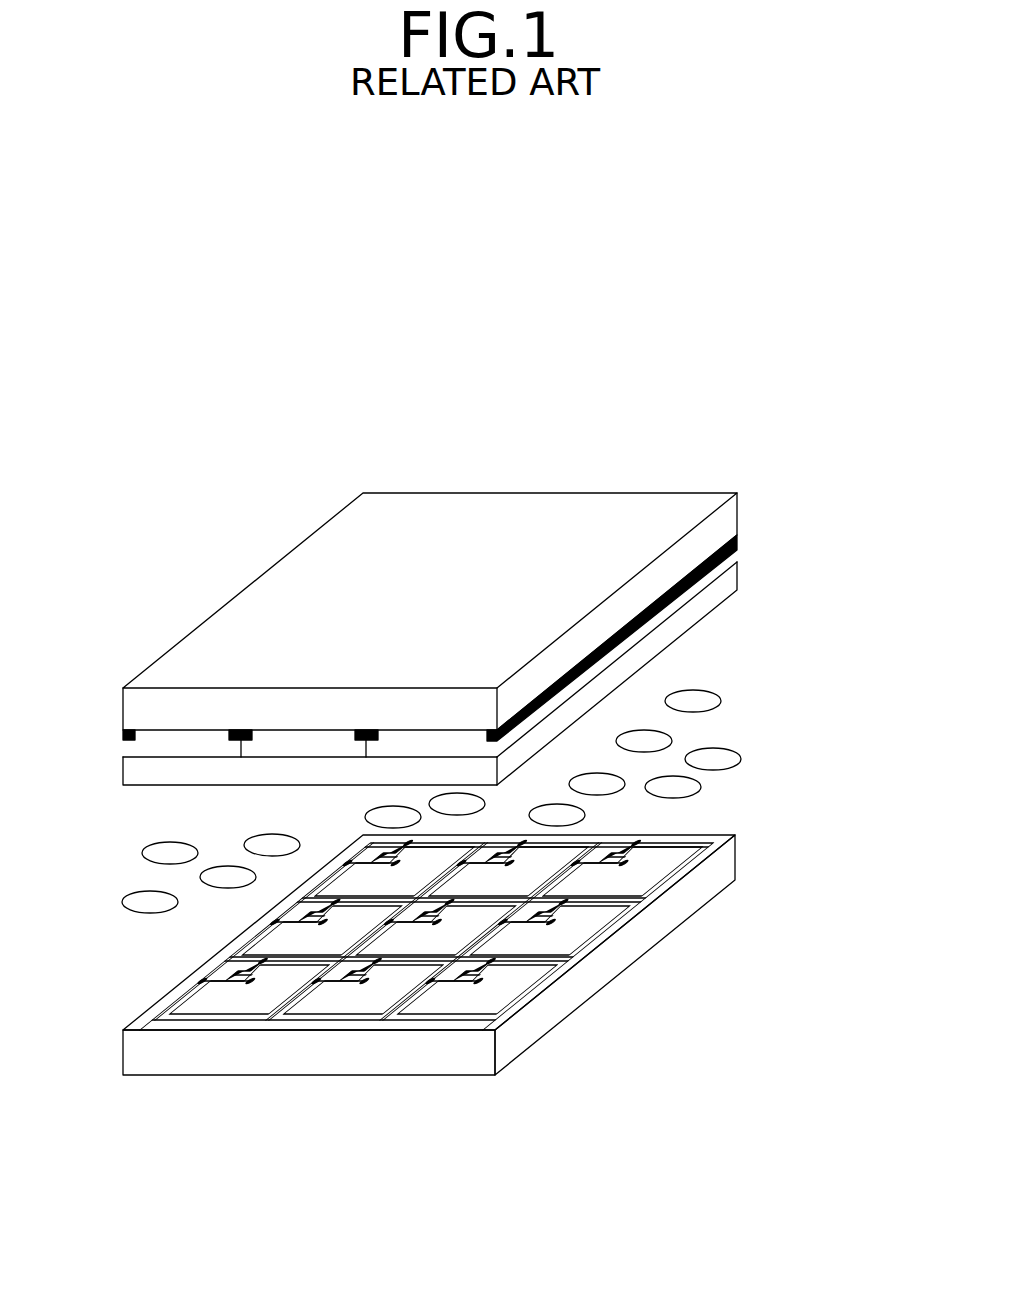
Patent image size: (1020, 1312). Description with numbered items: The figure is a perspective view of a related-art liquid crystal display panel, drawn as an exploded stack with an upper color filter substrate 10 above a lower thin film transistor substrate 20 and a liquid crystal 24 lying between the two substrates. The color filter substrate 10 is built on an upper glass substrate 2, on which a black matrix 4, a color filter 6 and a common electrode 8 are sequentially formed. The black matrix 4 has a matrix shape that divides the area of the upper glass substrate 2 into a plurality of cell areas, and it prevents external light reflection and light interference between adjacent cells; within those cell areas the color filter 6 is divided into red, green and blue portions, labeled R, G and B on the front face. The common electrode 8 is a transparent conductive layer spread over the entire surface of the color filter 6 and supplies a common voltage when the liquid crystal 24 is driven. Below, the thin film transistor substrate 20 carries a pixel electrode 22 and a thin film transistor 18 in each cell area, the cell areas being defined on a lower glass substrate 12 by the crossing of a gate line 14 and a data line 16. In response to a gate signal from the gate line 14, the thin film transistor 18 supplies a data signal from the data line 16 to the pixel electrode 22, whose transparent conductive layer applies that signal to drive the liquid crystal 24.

The upper glass substrate 2 is at (731, 520).
The black matrix 4 is at (122, 738).
The color filter 6 is at (429, 646).
The common electrode 8 is at (732, 582).
The color filter substrate 10 is at (480, 608).
The lower glass substrate 12 is at (723, 873).
The gate line 14 is at (638, 900).
The data line 16 is at (387, 1018).
The thin film transistor 18 is at (471, 985).
The thin film transistor substrate 20 is at (523, 1024).
The pixel electrode 22 is at (507, 996).
The liquid crystal 24 is at (714, 700).